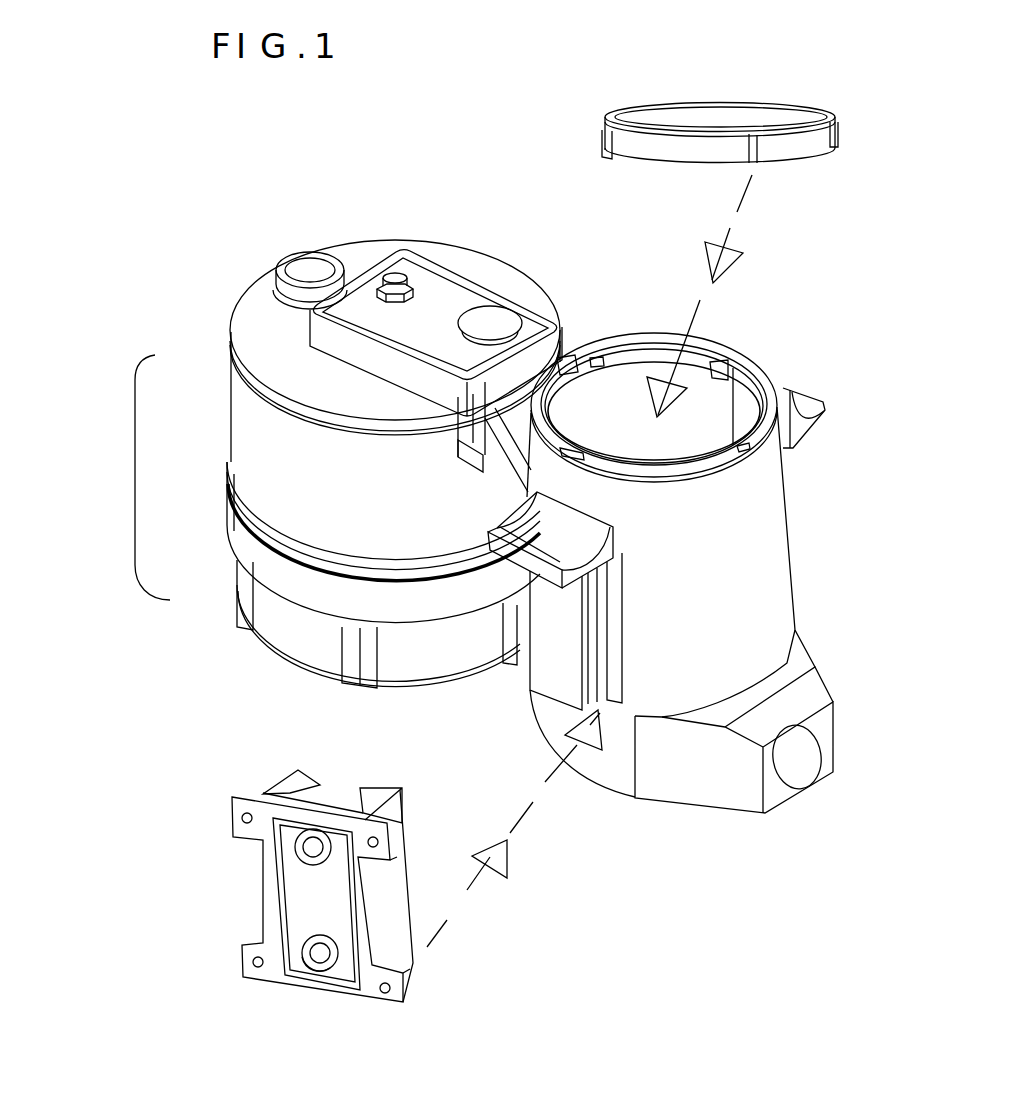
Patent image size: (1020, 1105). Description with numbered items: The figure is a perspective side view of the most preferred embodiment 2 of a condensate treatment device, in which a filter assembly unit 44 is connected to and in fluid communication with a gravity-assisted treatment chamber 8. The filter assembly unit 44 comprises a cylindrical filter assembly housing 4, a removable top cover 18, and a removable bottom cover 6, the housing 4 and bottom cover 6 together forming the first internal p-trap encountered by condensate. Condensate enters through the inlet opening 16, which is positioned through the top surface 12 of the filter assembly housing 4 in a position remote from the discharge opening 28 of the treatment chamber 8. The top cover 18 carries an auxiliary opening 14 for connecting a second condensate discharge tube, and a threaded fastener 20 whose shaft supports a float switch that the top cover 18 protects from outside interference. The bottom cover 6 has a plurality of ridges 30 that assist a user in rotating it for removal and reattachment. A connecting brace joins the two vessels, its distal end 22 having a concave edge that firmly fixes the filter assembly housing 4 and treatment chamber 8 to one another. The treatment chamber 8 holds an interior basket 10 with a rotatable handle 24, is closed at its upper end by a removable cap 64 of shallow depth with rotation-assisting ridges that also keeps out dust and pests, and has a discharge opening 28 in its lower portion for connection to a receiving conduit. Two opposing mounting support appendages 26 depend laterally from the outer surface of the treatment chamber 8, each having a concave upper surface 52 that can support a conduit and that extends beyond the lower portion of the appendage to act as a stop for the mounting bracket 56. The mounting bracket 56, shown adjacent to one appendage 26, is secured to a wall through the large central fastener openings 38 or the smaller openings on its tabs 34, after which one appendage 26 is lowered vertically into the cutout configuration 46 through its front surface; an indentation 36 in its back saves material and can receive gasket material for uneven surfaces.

The most preferred embodiment 2 is at (207, 277).
The filter assembly housing 4 is at (250, 417).
The bottom cover 6 is at (248, 546).
The treatment chamber 8 is at (773, 610).
The interior basket 10 is at (695, 423).
The top surface 12 is at (523, 292).
The auxiliary opening 14 is at (497, 330).
The inlet opening 16 is at (310, 269).
The top cover 18 is at (437, 287).
The threaded fastener 20 is at (407, 282).
The distal end 22 is at (507, 437).
The rotatable handle 24 is at (703, 362).
The mounting support appendages 26 is at (817, 423).
The discharge opening 28 is at (807, 745).
The ridges 30 is at (363, 668).
The tabs 34 is at (240, 826).
The indentation 36 is at (283, 903).
The central fastener openings 38 is at (334, 960).
The filter assembly unit 44 is at (135, 465).
The cutout configuration 46 is at (337, 792).
The concave upper surface 52 is at (562, 543).
The mounting bracket 56 is at (168, 770).
The cap 64 is at (764, 120).